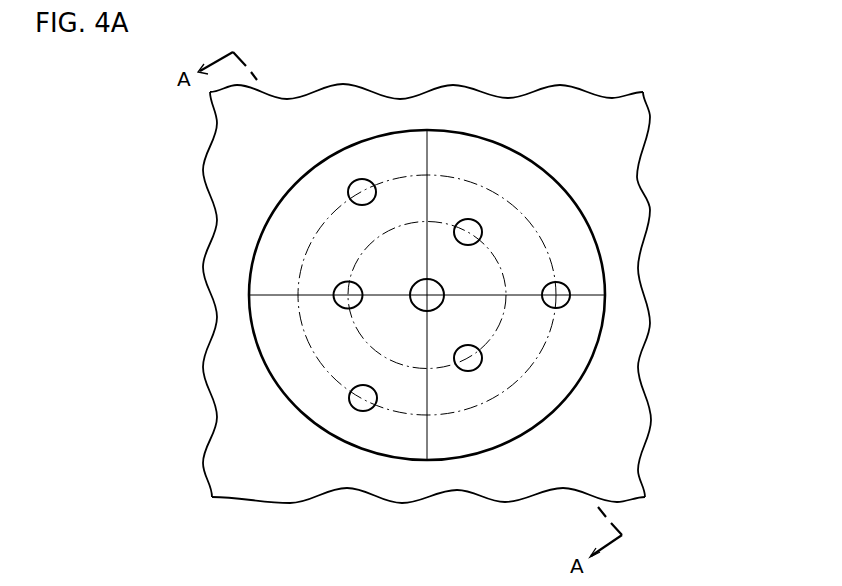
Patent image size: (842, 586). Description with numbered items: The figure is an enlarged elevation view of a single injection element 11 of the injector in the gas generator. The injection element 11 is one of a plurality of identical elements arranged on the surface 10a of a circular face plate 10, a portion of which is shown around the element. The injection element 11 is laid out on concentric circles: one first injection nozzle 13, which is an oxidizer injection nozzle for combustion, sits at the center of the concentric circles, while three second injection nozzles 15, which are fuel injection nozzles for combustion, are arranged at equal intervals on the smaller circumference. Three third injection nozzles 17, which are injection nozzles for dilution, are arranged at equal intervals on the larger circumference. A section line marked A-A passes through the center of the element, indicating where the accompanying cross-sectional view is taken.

The face plate 10 is at (647, 177).
The surface 10a is at (628, 210).
The injection element 11 is at (565, 353).
The first injection nozzle 13 is at (437, 283).
The second injection nozzle 15 is at (344, 302).
The third injection nozzle 17 is at (364, 189).